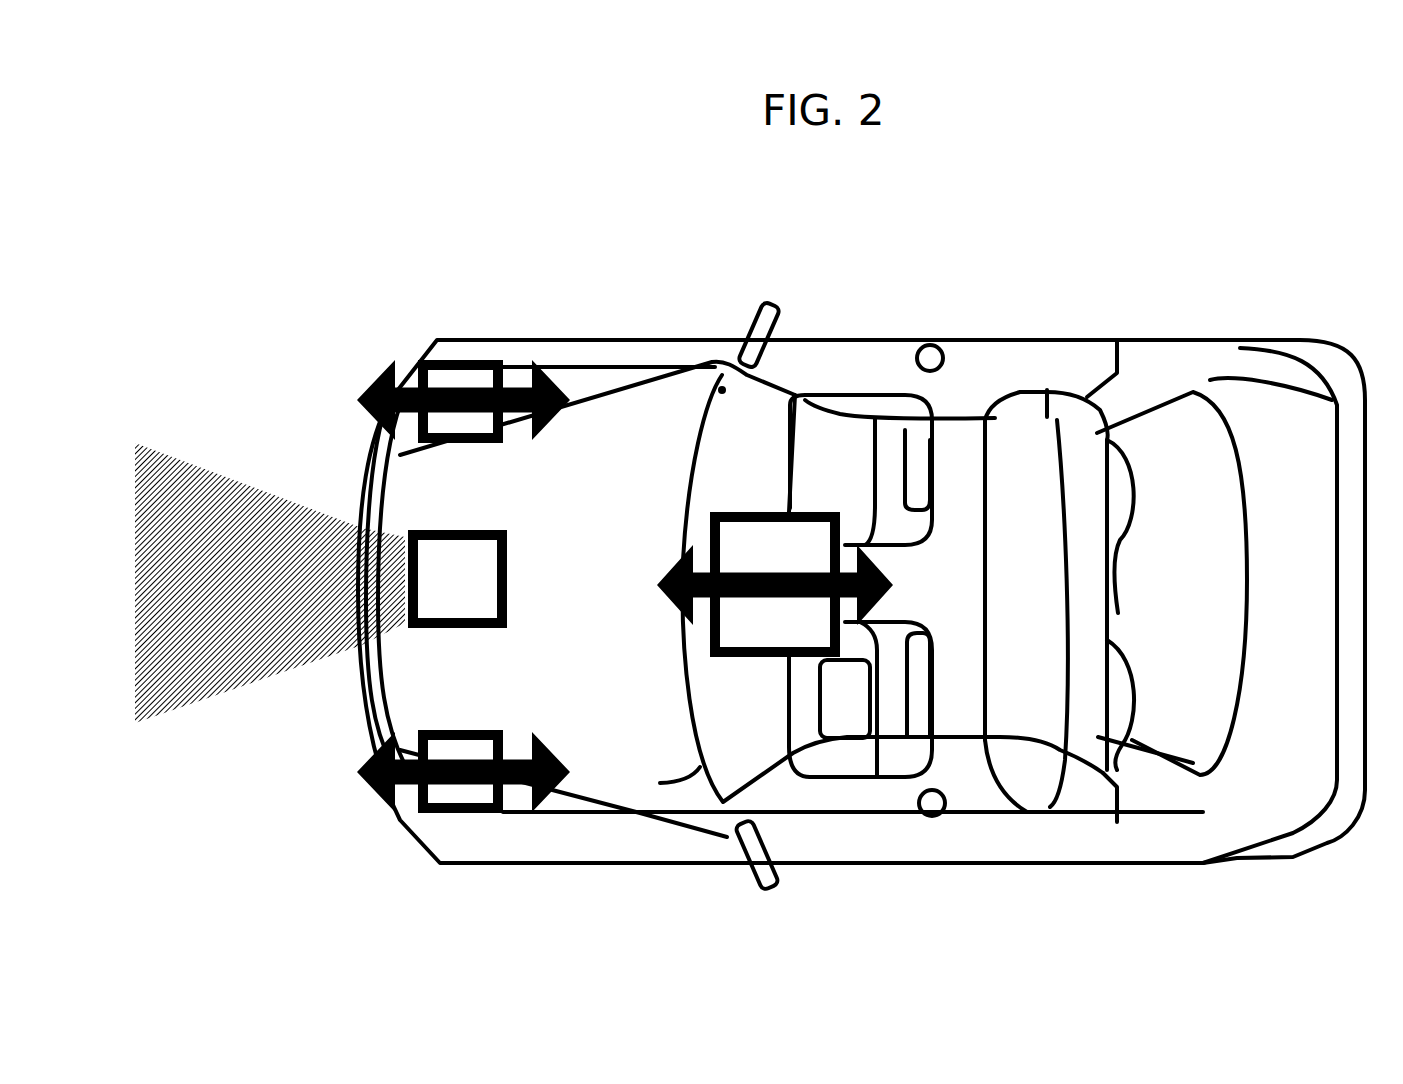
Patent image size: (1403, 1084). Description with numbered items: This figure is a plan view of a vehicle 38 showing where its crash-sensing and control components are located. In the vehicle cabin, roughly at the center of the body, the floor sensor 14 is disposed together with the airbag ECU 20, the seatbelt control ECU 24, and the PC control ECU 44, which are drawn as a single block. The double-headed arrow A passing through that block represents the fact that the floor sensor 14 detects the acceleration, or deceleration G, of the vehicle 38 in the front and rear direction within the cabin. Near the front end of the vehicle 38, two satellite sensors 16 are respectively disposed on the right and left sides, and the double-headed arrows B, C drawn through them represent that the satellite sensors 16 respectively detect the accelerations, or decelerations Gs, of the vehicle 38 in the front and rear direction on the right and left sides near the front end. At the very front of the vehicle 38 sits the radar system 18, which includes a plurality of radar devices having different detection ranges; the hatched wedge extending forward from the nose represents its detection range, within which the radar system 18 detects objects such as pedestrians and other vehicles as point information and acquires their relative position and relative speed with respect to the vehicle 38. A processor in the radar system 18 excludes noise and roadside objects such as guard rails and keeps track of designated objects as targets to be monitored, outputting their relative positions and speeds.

The floor sensor 14 is at (772, 477).
The satellite sensor 16 is at (463, 595).
The radar system 18 is at (472, 571).
The airbag ECU 20 is at (772, 477).
The seatbelt control ECU 24 is at (772, 477).
The vehicle 38 is at (1170, 341).
The PC control ECU 44 is at (772, 477).
The arrow A is at (735, 592).
The arrow B is at (467, 385).
The arrow C is at (473, 787).